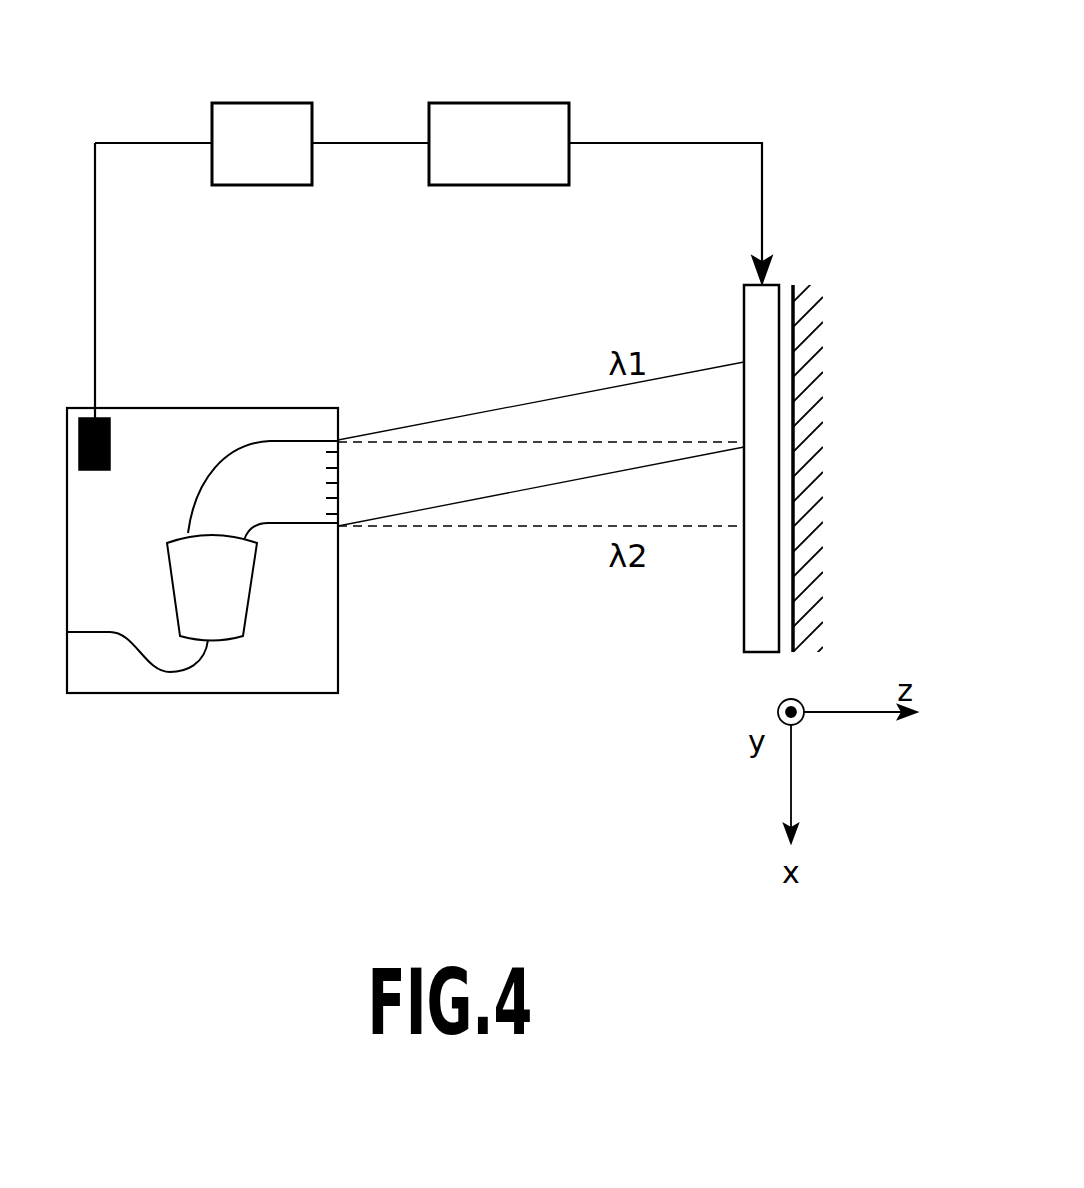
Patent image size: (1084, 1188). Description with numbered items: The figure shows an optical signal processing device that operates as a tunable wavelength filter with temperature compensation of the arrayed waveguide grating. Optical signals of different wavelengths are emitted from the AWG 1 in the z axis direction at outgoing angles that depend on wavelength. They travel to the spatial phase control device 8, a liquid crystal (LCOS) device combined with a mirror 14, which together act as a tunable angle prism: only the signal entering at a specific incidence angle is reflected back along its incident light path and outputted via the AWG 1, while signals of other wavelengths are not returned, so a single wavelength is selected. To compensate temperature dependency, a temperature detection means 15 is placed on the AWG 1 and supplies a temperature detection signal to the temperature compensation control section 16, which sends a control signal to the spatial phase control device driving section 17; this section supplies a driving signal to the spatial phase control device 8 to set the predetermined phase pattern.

The AWG 1 is at (241, 408).
The spatial phase control device 8 is at (773, 284).
The mirror 14 is at (815, 400).
The temperature detection means 15 is at (105, 418).
The temperature compensation control section 16 is at (266, 103).
The spatial phase control device driving section 17 is at (488, 103).